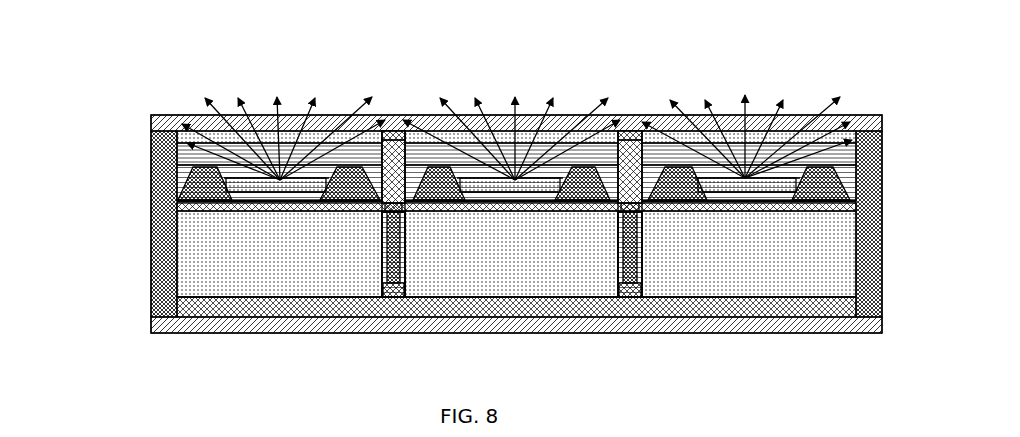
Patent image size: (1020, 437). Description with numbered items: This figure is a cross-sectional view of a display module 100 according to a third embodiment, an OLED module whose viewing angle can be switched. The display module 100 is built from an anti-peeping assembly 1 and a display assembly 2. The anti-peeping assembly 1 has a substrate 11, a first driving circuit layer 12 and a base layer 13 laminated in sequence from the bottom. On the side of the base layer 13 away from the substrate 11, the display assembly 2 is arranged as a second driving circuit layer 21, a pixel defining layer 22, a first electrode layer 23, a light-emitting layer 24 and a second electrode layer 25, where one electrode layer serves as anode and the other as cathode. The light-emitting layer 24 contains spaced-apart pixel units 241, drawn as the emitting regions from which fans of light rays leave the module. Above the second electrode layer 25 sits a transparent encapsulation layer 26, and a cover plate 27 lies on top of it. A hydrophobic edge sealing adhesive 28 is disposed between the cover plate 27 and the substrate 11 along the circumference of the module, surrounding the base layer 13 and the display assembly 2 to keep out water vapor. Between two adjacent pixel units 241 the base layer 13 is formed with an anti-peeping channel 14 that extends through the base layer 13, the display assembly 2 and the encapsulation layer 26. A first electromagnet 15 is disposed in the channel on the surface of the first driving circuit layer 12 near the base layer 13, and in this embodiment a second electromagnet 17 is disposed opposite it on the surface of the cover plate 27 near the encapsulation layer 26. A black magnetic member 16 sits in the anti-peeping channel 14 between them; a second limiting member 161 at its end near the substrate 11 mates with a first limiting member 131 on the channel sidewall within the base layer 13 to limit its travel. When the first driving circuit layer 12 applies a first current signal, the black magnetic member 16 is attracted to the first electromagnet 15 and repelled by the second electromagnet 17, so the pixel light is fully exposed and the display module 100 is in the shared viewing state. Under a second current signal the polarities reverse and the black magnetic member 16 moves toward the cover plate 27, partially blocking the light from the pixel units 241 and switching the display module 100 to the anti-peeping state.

The display module 100 is at (538, 65).
The anti-peeping assembly 1 is at (92, 267).
The substrate 11 is at (200, 325).
The first driving circuit layer 12 is at (190, 305).
The base layer 13 is at (190, 283).
The first limiting member 131 is at (403, 212).
The anti-peeping channel 14 is at (383, 255).
The first electromagnet 15 is at (383, 292).
The black magnetic member 16 is at (197, 278).
The second limiting member 161 is at (398, 297).
The display assembly 2 is at (52, 107).
The second driving circuit layer 21 is at (383, 237).
The pixel defining layer 22 is at (180, 202).
The first electrode layer 23 is at (177, 192).
The light-emitting layer 24 is at (452, 224).
The pixel unit 241 is at (167, 172).
The second electrode layer 25 is at (187, 143).
The encapsulation layer 26 is at (182, 124).
The cover plate 27 is at (193, 121).
The second electromagnet 17 is at (392, 131).
The edge sealing adhesive 28 is at (868, 245).